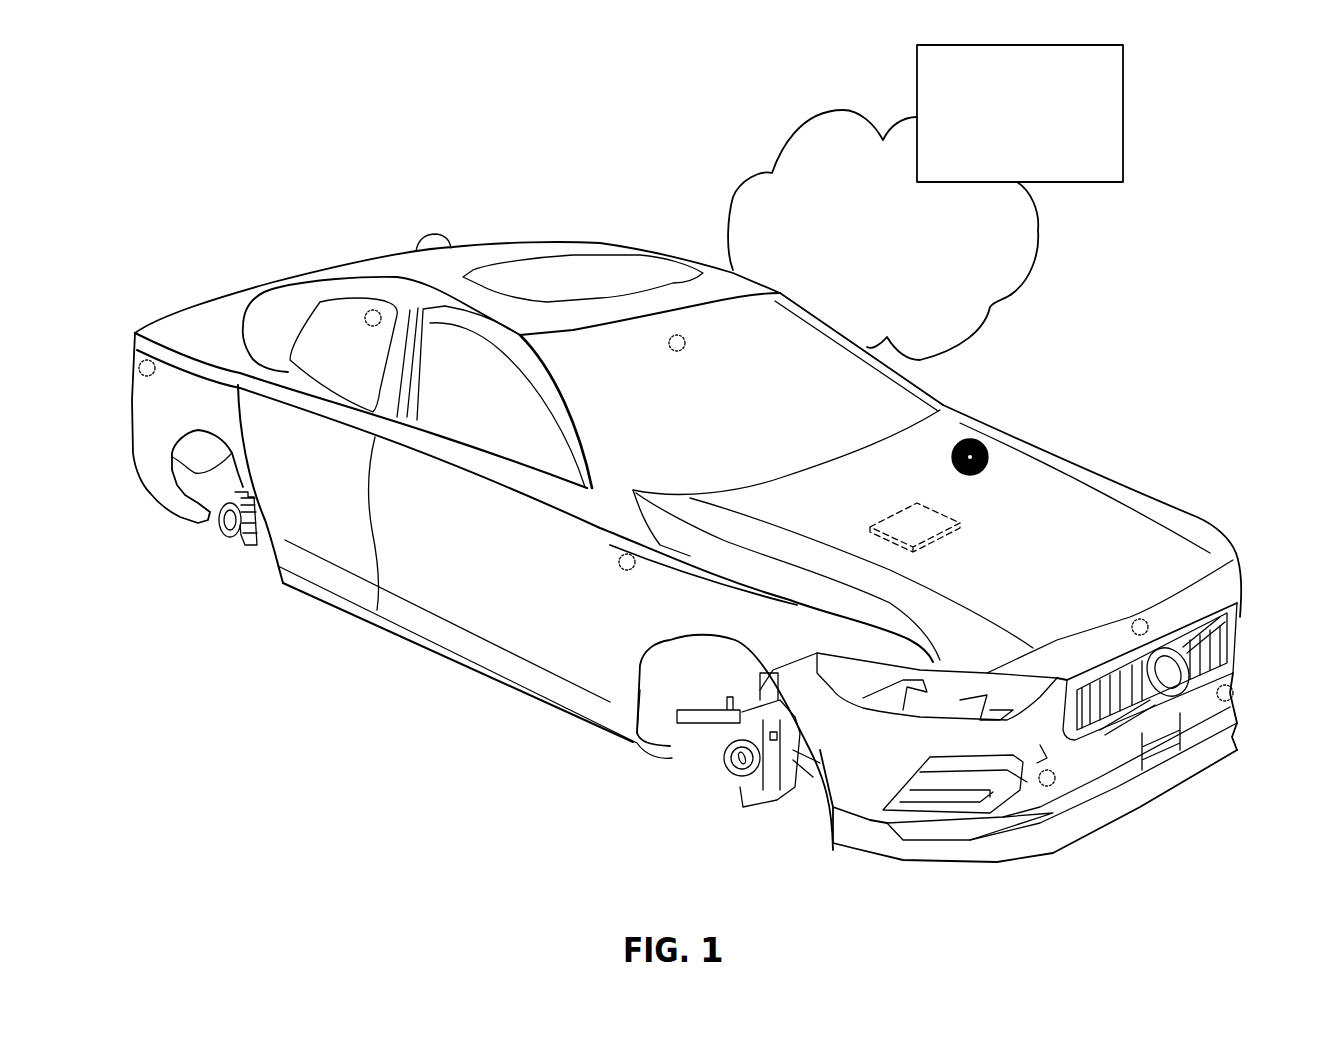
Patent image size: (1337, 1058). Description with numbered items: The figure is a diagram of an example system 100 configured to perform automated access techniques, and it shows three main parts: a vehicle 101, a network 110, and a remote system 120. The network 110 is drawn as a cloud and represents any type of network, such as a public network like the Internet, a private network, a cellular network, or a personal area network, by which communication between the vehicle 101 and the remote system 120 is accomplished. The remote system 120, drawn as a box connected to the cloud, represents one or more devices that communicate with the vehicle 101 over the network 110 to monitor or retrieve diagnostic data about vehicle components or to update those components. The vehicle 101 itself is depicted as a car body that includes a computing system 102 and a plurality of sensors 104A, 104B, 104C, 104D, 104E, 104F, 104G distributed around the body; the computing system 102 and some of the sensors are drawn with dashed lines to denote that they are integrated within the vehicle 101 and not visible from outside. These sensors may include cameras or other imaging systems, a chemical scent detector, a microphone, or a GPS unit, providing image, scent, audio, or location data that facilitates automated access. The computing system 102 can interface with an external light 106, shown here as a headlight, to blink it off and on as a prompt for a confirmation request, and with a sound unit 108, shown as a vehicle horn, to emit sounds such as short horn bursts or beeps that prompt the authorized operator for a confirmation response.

The system 100 is at (1200, 104).
The vehicle 101 is at (590, 248).
The computing system 102 is at (927, 523).
The sensor 104A is at (1048, 786).
The sensor 104B is at (1139, 619).
The sensor 104C is at (1228, 700).
The sensor 104D is at (678, 351).
The sensor 104E is at (628, 570).
The sensor 104F is at (148, 377).
The sensor 104G is at (372, 326).
The external light 106 is at (948, 713).
The sound unit 108 is at (985, 473).
The network 110 is at (883, 235).
The remote system 120 is at (1020, 113).